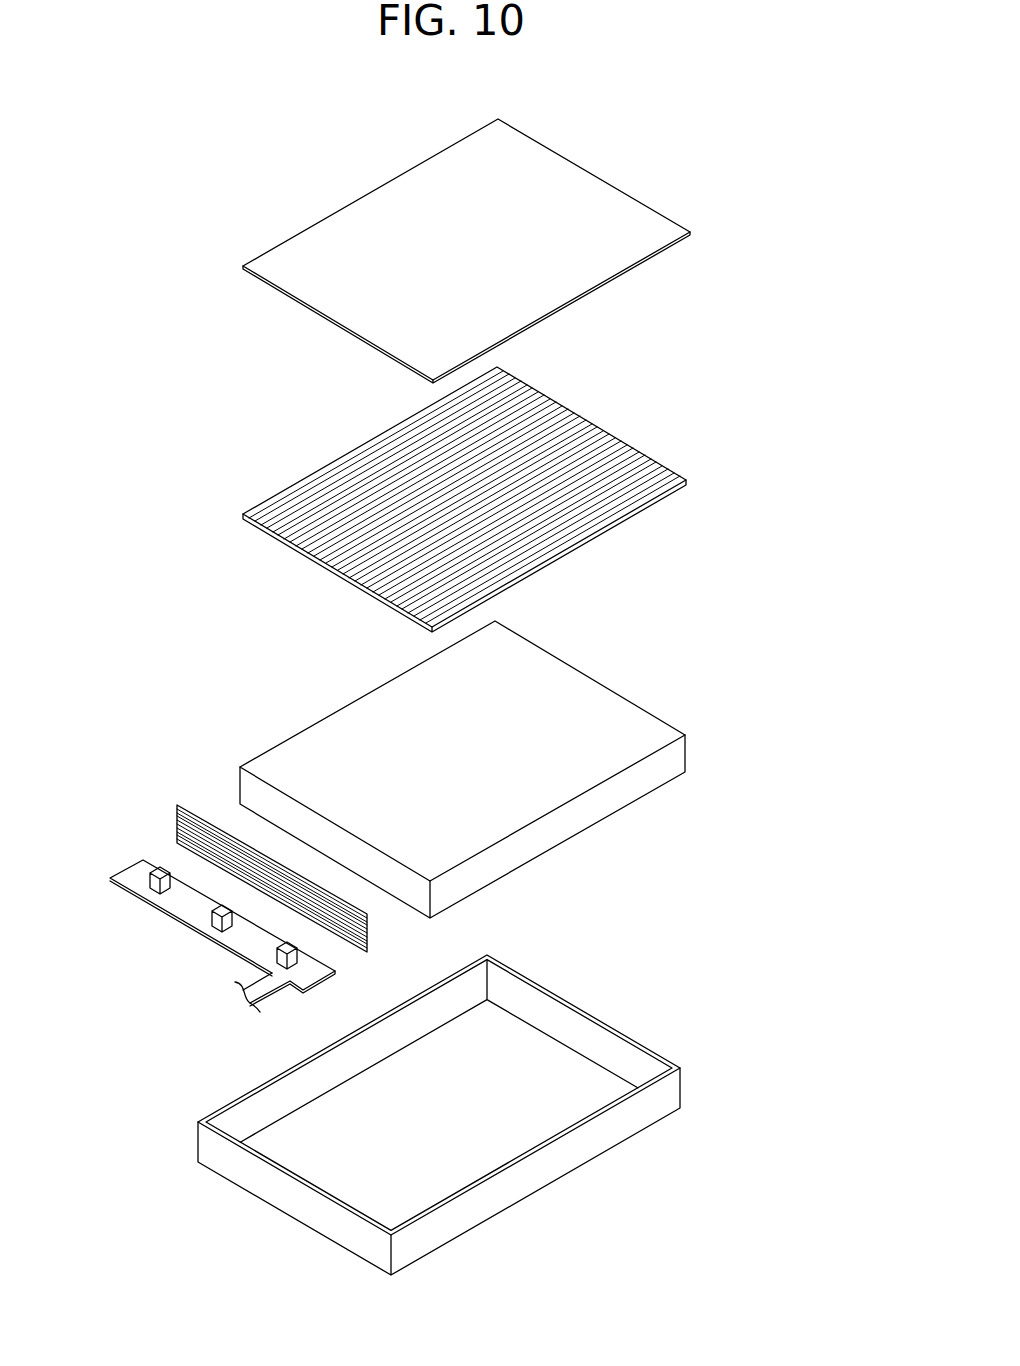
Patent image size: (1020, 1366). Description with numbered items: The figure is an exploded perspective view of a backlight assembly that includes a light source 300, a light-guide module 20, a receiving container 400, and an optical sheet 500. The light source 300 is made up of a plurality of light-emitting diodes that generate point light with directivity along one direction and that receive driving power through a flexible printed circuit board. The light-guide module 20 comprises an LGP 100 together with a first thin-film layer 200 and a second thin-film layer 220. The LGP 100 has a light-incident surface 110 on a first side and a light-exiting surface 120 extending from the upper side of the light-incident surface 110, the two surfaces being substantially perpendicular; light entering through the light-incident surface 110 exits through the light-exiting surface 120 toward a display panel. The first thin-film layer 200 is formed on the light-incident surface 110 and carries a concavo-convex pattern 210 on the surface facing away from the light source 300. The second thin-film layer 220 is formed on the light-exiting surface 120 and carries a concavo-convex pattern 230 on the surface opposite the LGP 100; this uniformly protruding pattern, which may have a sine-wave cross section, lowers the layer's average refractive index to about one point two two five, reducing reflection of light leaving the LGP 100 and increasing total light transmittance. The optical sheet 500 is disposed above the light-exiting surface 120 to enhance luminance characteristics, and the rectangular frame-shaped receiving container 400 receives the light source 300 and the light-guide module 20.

The optical sheet 500 is at (690, 233).
The concavo-convex pattern 230 is at (643, 463).
The second thin-film layer 220 is at (503, 499).
The light-exiting surface 120 is at (638, 722).
The LGP 100 is at (501, 792).
The light-incident surface 110 is at (400, 888).
The light-guide module 20 is at (347, 598).
The first thin-film layer 200 is at (229, 848).
The concavo-convex pattern 210 is at (177, 827).
The light source 300 is at (155, 885).
The receiving container 400 is at (670, 1093).